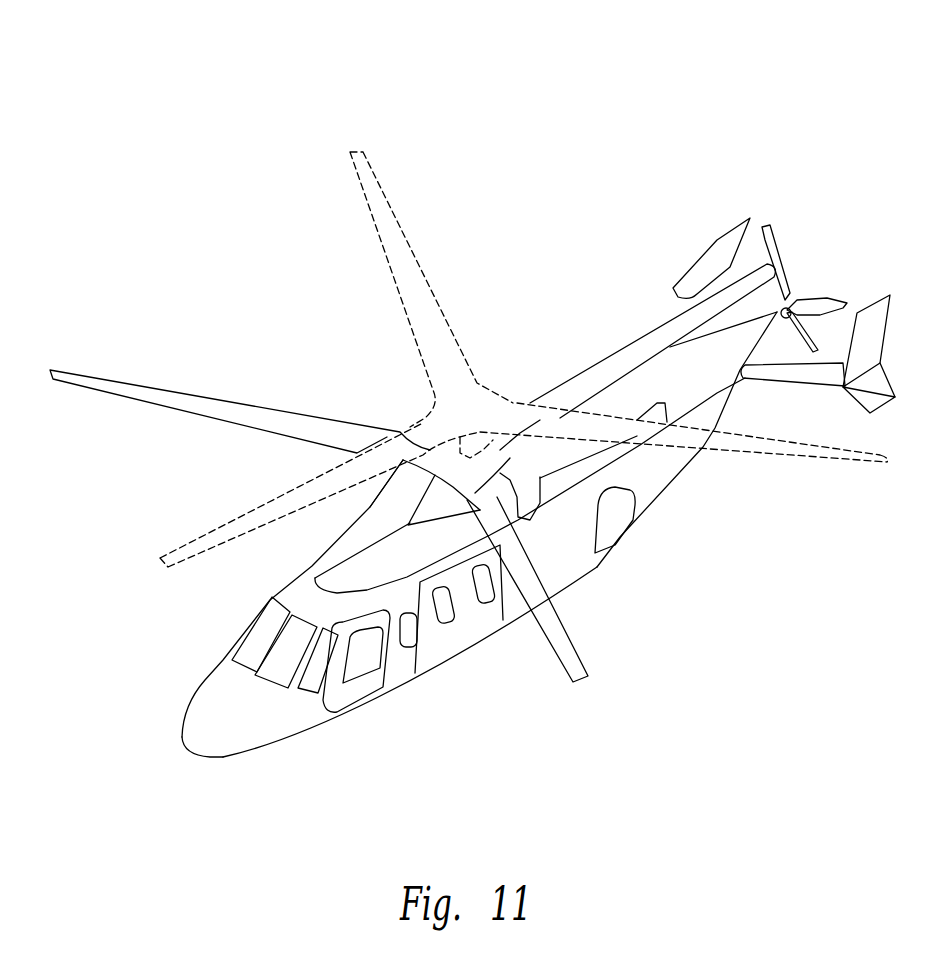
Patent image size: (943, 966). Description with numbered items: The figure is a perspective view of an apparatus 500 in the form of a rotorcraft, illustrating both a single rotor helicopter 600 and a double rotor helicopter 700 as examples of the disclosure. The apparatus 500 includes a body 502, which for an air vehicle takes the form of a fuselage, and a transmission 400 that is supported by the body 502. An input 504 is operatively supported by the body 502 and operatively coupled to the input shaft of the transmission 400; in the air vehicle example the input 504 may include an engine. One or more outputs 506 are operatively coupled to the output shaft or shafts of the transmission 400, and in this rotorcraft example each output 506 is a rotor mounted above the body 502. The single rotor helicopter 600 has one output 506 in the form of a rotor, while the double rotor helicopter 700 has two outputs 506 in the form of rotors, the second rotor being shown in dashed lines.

The double rotor helicopter 700 is at (693, 92).
The single rotor helicopter 600 is at (752, 103).
The apparatus 500 is at (802, 118).
The output 506 is at (405, 237).
The transmission 400 is at (515, 404).
The input 504 is at (397, 495).
The body 502 is at (573, 572).